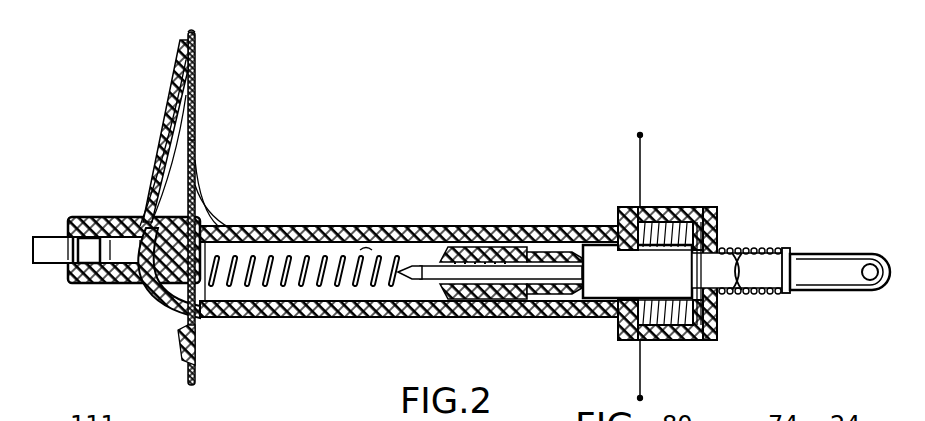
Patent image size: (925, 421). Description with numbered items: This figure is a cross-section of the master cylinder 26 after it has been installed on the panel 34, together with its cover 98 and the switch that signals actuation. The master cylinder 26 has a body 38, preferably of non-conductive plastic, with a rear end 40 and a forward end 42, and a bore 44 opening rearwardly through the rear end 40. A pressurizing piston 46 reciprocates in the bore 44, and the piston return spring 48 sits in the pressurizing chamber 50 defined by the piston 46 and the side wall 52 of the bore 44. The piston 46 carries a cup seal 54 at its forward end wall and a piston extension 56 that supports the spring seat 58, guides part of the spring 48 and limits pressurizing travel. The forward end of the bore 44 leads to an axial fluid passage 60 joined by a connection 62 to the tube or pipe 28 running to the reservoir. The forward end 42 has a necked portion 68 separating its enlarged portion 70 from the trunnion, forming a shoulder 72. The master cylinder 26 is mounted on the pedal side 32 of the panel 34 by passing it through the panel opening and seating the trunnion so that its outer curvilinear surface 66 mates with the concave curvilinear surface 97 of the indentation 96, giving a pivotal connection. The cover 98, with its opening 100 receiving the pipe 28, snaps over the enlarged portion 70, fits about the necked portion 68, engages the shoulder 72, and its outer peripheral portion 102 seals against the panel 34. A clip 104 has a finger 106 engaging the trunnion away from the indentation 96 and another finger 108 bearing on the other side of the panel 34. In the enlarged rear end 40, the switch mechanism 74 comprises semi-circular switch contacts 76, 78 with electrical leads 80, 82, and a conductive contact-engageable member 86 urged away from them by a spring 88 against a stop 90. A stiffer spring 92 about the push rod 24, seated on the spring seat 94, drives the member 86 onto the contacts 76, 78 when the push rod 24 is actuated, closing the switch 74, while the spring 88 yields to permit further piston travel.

The push rod 24 is at (820, 262).
The master cylinder 26 is at (427, 212).
The tube or pipe 28 is at (53, 237).
The pedal side 32 is at (197, 345).
The panel 34 is at (205, 366).
The body 38 is at (338, 318).
The rear end 40 is at (690, 207).
The forward end 42 is at (92, 283).
The bore 44 is at (338, 292).
The pressurizing piston 46 is at (608, 258).
The piston return spring 48 is at (272, 302).
The pressurizing chamber 50 is at (366, 292).
The side wall 52 is at (405, 300).
The cup seal 54 is at (565, 250).
The piston extension 56 is at (460, 299).
The spring seat 58 is at (505, 300).
The fluid passage 60 is at (110, 284).
The connection 62 is at (76, 283).
The outer curvilinear surface 66 is at (162, 318).
The necked portion 68 is at (103, 222).
The enlarged portion 70 is at (96, 218).
The shoulder 72 is at (126, 284).
The switch mechanism 74 is at (725, 211).
The switch contact 76 is at (622, 210).
The switch contact 78 is at (618, 318).
The electrical lead 80 is at (641, 165).
The electrical lead 82 is at (640, 358).
The contact-engageable member 86 is at (702, 252).
The spring 88 is at (658, 340).
The stop 90 is at (699, 323).
The spring 92 is at (752, 293).
The spring seat 94 is at (788, 295).
The indentation 96 is at (207, 320).
The concave curvilinear surface 97 is at (234, 232).
The cover 98 is at (168, 77).
The opening 100 is at (120, 222).
The outer peripheral portion 102 is at (180, 42).
The clip 104 is at (205, 146).
The finger 106 is at (204, 224).
The finger 108 is at (143, 215).